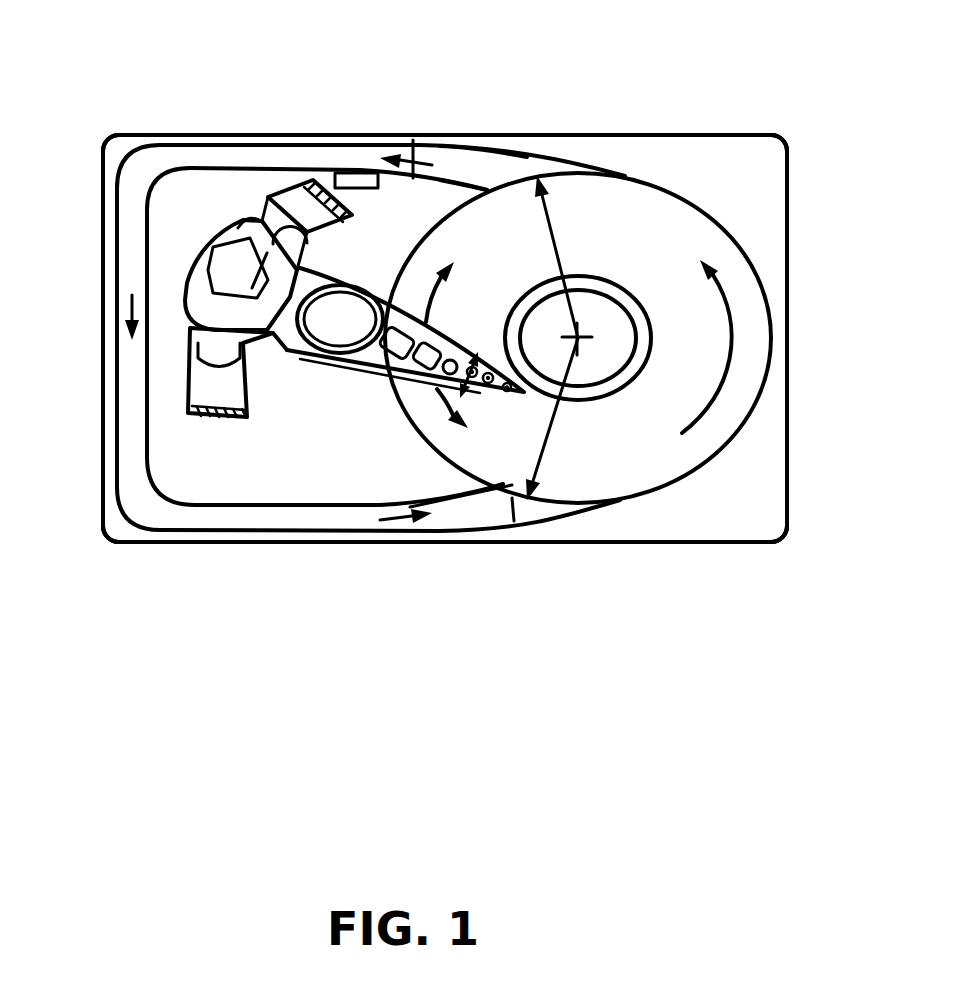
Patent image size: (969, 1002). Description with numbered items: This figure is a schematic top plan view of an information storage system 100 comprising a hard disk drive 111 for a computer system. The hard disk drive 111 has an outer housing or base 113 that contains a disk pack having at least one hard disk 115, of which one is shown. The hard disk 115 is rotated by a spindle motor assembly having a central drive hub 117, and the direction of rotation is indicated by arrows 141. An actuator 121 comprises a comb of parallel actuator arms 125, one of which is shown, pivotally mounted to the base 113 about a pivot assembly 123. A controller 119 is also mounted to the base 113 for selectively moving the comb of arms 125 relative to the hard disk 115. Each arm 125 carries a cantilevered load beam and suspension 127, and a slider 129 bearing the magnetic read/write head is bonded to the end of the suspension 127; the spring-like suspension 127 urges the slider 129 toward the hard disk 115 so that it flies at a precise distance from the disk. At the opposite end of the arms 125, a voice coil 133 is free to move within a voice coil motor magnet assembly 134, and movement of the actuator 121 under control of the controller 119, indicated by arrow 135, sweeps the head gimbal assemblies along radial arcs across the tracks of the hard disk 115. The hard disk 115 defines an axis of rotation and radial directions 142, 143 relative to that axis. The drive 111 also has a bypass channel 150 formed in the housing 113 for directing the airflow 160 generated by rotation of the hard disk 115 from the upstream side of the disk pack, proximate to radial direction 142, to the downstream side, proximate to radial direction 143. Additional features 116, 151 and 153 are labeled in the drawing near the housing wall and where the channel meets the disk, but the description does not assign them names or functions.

The information storage system 100 is at (147, 31).
The hard disk drive 111 is at (788, 393).
The outer housing or base 113 is at (640, 134).
The hard disk 115 is at (658, 198).
The side wall 116 is at (87, 212).
The central drive hub 117 is at (610, 277).
The controller 119 is at (373, 190).
The actuator 121 is at (350, 334).
The pivot assembly 123 is at (311, 363).
The actuator arm 125 is at (389, 298).
The load beam and suspension 127 is at (433, 331).
The slider 129 is at (491, 394).
The voice coil 133 is at (226, 247).
The voice coil motor magnet assembly 134 is at (296, 204).
The arrow indicating actuator movement 135 is at (438, 384).
The arrows indicating disk rotation 141 is at (447, 273).
The radial direction 142 is at (557, 236).
The radial direction 143 is at (542, 443).
The bypass channel 150 is at (360, 160).
The channel inlet 151 is at (487, 188).
The channel outlet 153 is at (483, 153).
The airflow 160 is at (120, 302).